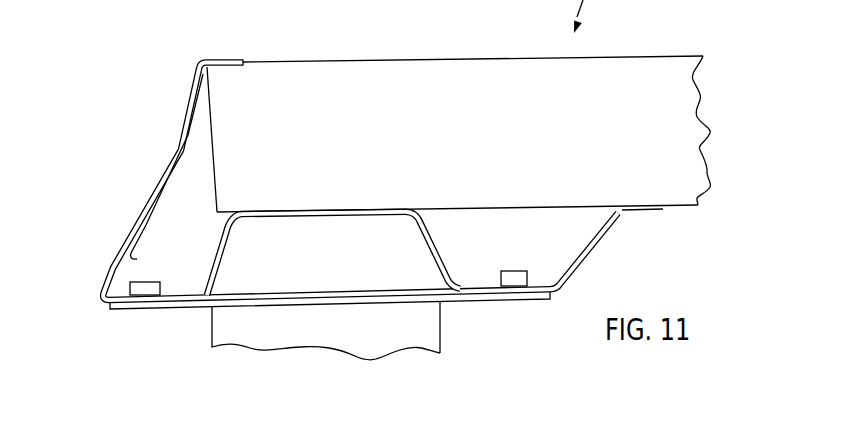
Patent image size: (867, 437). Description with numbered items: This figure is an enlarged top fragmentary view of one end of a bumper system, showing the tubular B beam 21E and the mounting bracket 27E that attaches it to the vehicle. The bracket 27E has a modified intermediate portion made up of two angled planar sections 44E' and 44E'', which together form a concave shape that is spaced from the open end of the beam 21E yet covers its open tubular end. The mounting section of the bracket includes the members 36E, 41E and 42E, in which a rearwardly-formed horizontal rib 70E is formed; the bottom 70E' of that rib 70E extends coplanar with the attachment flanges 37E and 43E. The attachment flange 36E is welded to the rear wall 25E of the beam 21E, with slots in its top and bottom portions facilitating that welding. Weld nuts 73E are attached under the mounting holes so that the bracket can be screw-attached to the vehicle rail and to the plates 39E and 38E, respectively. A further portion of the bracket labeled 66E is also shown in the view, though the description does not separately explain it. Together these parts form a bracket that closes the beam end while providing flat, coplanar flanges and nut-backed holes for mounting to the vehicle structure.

The B beam 21E is at (368, 42).
The rear wall 25E is at (520, 206).
The mounting bracket 27E is at (78, 172).
The attachment flange 36E is at (365, 242).
The attachment flange 37E is at (465, 283).
The plate 38E is at (147, 313).
The plate 39E is at (442, 318).
The member 41E is at (432, 235).
The member 42E is at (218, 242).
The left pocket 43E is at (185, 290).
The angled planar section 44E' is at (172, 139).
The angled planar section 44E'' is at (131, 166).
The tube 66E is at (176, 153).
The horizontal rib 70E is at (332, 305).
The bottom of rib 70E' is at (326, 326).
The weld nuts 73E is at (145, 283).